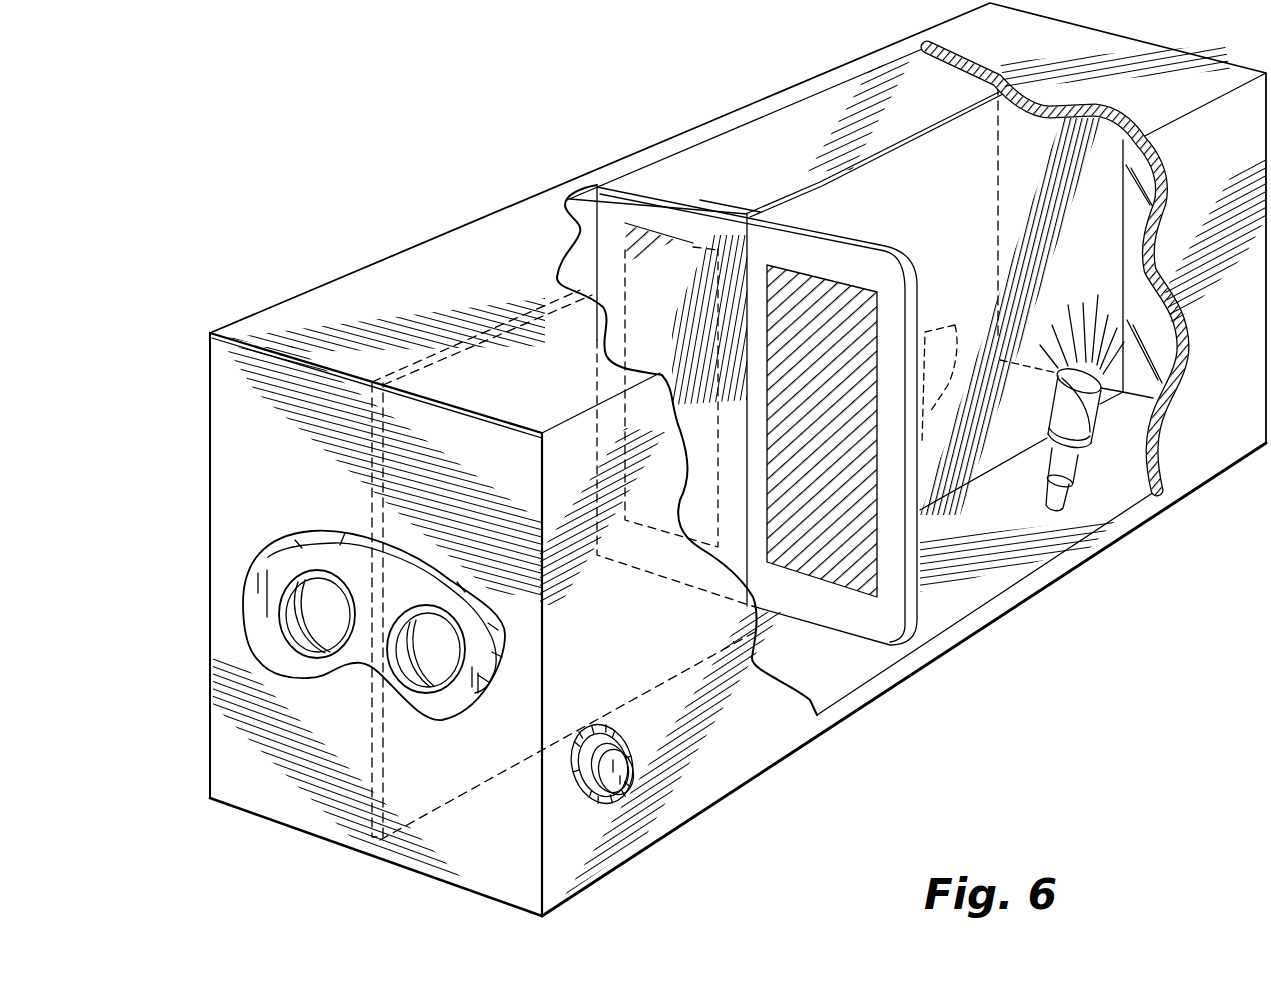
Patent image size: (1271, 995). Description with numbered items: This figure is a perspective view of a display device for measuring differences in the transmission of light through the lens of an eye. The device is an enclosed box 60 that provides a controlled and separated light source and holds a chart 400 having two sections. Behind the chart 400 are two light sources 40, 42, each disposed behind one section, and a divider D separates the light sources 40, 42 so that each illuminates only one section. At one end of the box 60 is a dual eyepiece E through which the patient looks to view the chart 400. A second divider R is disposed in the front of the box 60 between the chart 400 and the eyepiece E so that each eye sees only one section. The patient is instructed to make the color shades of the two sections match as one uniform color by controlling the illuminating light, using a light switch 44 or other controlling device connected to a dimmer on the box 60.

The enclosed box 60 is at (428, 258).
The second divider R is at (613, 258).
The chart 400 is at (729, 186).
The divider D is at (792, 195).
The light source 42 is at (955, 325).
The light source 40 is at (1067, 465).
The dual eyepiece E is at (243, 601).
The light switch 44 is at (624, 793).